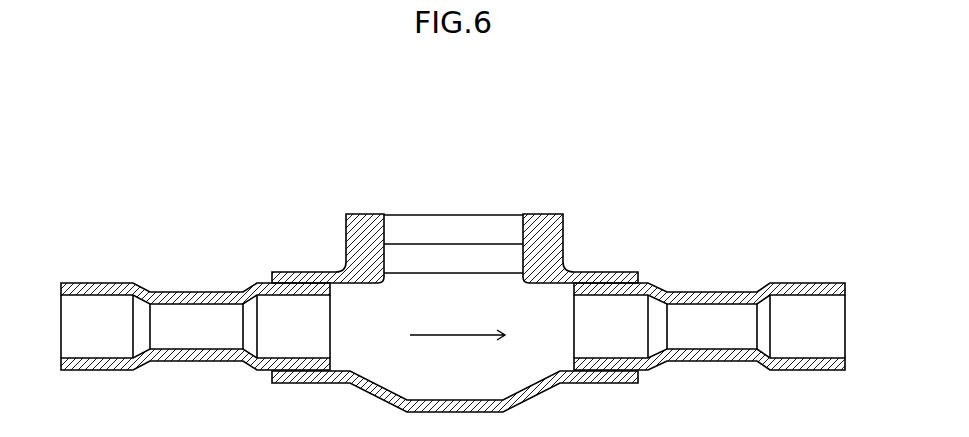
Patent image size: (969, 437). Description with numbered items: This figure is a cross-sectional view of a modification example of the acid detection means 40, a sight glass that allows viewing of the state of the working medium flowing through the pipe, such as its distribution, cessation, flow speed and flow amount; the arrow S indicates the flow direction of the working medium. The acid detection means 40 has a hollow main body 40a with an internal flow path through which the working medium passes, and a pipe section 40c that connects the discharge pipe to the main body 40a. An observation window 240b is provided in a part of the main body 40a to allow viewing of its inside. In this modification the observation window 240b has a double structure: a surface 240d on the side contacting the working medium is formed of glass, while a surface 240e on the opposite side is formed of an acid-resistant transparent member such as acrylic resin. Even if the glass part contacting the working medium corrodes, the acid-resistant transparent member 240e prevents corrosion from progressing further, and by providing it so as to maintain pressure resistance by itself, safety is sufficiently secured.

The acid detection means 40 is at (455, 237).
The main body 40a is at (593, 270).
The pipe section 40c is at (203, 293).
The observation window 240b is at (463, 188).
The acid-resistant transparent member 240e is at (408, 225).
The surface formed of glass 240d is at (403, 147).